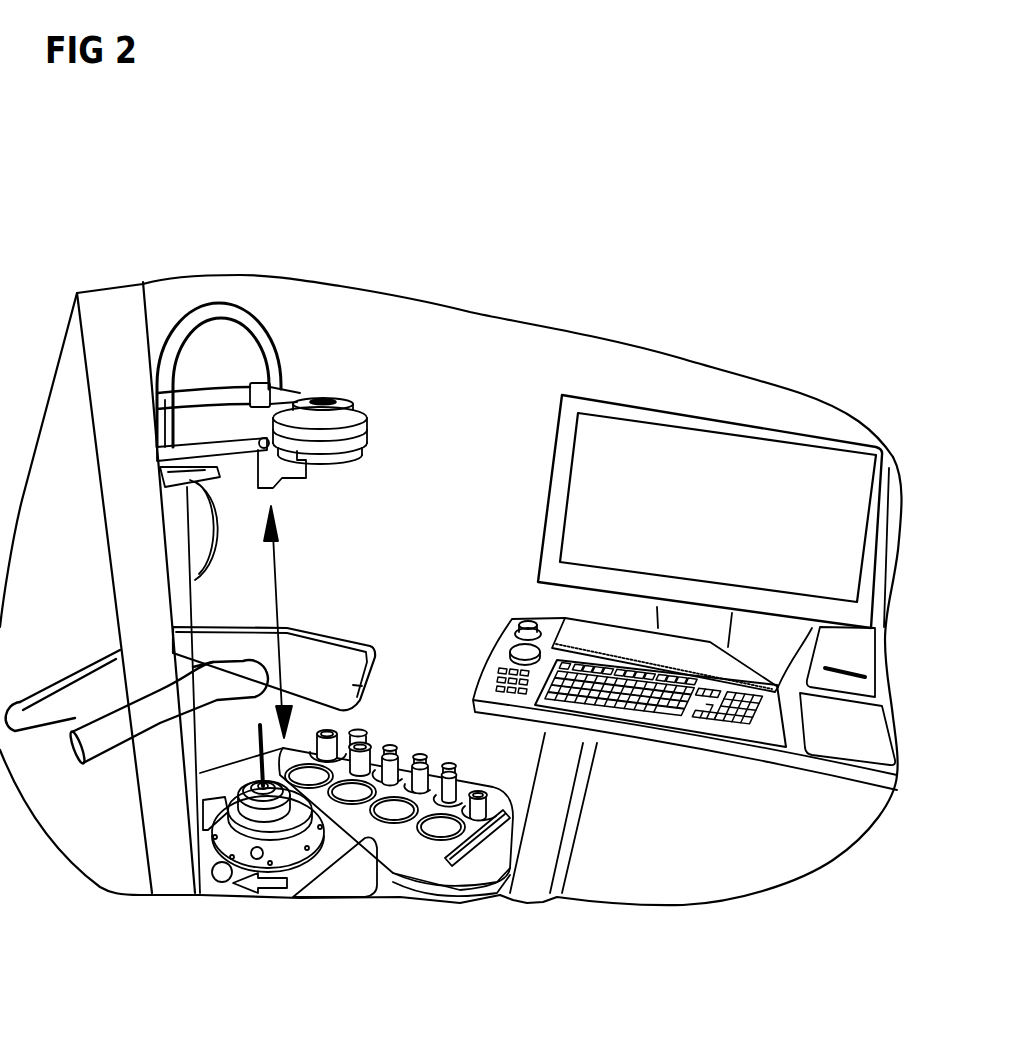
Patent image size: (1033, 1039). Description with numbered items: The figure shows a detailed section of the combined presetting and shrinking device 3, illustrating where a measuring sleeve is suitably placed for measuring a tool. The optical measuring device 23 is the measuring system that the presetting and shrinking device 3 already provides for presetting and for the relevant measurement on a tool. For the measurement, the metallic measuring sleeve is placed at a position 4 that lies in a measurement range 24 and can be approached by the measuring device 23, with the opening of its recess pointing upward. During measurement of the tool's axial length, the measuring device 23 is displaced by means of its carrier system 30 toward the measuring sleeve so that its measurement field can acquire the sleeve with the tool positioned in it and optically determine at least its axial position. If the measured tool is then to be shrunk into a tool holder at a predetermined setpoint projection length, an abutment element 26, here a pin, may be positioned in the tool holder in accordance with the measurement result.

The combined presetting and shrinking device 3 is at (451, 590).
The position 4 is at (223, 882).
The optical measuring device 23 is at (355, 688).
The measurement range 24 is at (280, 608).
The abutment element 26 is at (250, 792).
The carrier system 30 is at (105, 733).